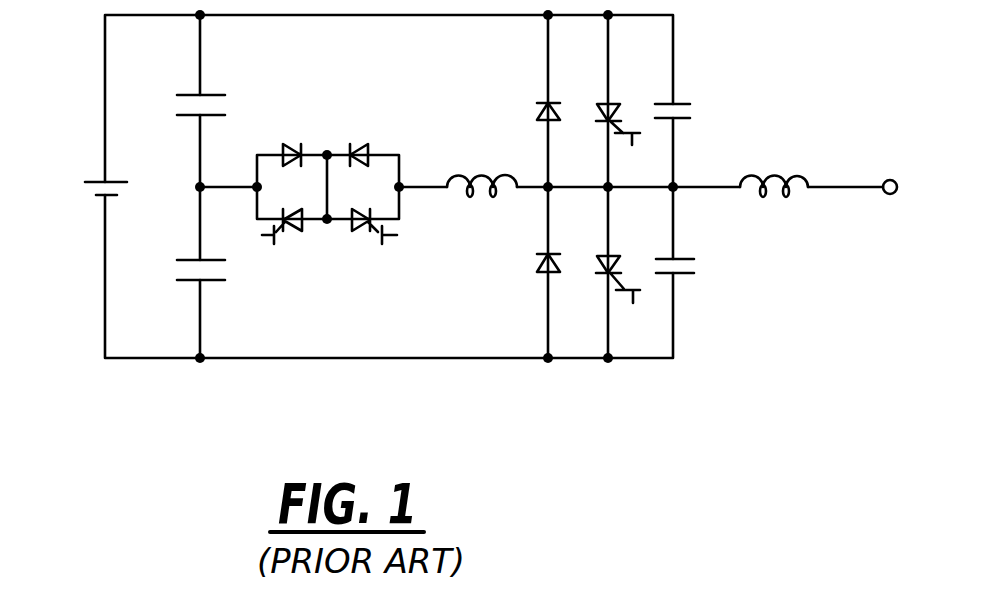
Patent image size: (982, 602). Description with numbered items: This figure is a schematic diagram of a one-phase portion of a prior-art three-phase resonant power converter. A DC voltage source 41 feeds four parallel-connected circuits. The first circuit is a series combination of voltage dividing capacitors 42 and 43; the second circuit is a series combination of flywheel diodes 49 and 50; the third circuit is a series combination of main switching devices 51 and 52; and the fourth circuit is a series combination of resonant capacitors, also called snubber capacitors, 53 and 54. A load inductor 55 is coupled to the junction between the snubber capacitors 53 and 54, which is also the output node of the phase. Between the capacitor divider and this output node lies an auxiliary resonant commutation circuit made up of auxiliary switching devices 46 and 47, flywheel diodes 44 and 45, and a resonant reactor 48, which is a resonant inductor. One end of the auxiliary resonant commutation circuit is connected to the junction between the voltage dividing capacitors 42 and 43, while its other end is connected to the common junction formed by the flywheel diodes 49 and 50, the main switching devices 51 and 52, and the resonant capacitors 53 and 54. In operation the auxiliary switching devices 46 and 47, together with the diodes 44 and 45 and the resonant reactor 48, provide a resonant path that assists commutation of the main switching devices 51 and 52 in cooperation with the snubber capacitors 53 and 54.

The DC voltage source 41 is at (100, 198).
The voltage dividing capacitor 42 is at (188, 117).
The voltage dividing capacitor 43 is at (190, 282).
The flywheel diode 44 is at (286, 147).
The flywheel diode 45 is at (357, 147).
The auxiliary switching device 46 is at (296, 233).
The auxiliary switching device 47 is at (357, 233).
The resonant reactor 48 is at (490, 194).
The flywheel diode 49 is at (537, 105).
The flywheel diode 50 is at (547, 264).
The main switching device 51 is at (632, 145).
The main switching device 52 is at (633, 303).
The resonant capacitor 53 is at (681, 120).
The resonant capacitor 54 is at (683, 275).
The load inductor 55 is at (785, 196).